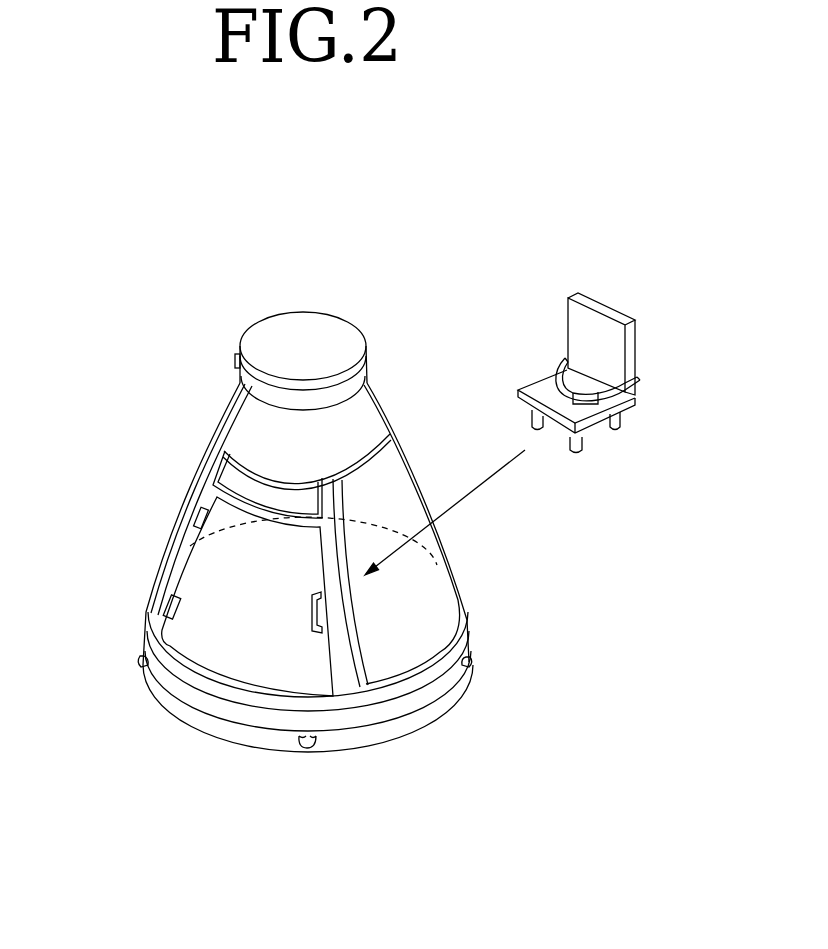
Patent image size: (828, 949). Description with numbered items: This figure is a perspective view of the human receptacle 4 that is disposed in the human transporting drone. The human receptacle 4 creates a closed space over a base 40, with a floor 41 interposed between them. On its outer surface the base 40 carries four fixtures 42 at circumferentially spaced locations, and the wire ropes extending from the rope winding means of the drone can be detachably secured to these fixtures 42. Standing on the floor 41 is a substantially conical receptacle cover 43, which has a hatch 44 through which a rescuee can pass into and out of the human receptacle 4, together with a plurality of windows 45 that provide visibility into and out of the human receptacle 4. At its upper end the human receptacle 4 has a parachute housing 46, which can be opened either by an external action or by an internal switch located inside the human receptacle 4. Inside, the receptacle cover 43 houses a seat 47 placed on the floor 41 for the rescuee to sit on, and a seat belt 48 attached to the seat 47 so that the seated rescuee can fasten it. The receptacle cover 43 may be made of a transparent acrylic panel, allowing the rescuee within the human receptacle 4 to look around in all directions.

The human receptacle 4 is at (120, 462).
The base 40 is at (225, 728).
The floor 41 is at (375, 716).
The fixtures 42 is at (140, 660).
The receptacle cover 43 is at (246, 411).
The hatch 44 is at (215, 568).
The windows 45 is at (190, 496).
The parachute housing 46 is at (303, 311).
The seat 47 is at (610, 315).
The seat belt 48 is at (640, 381).